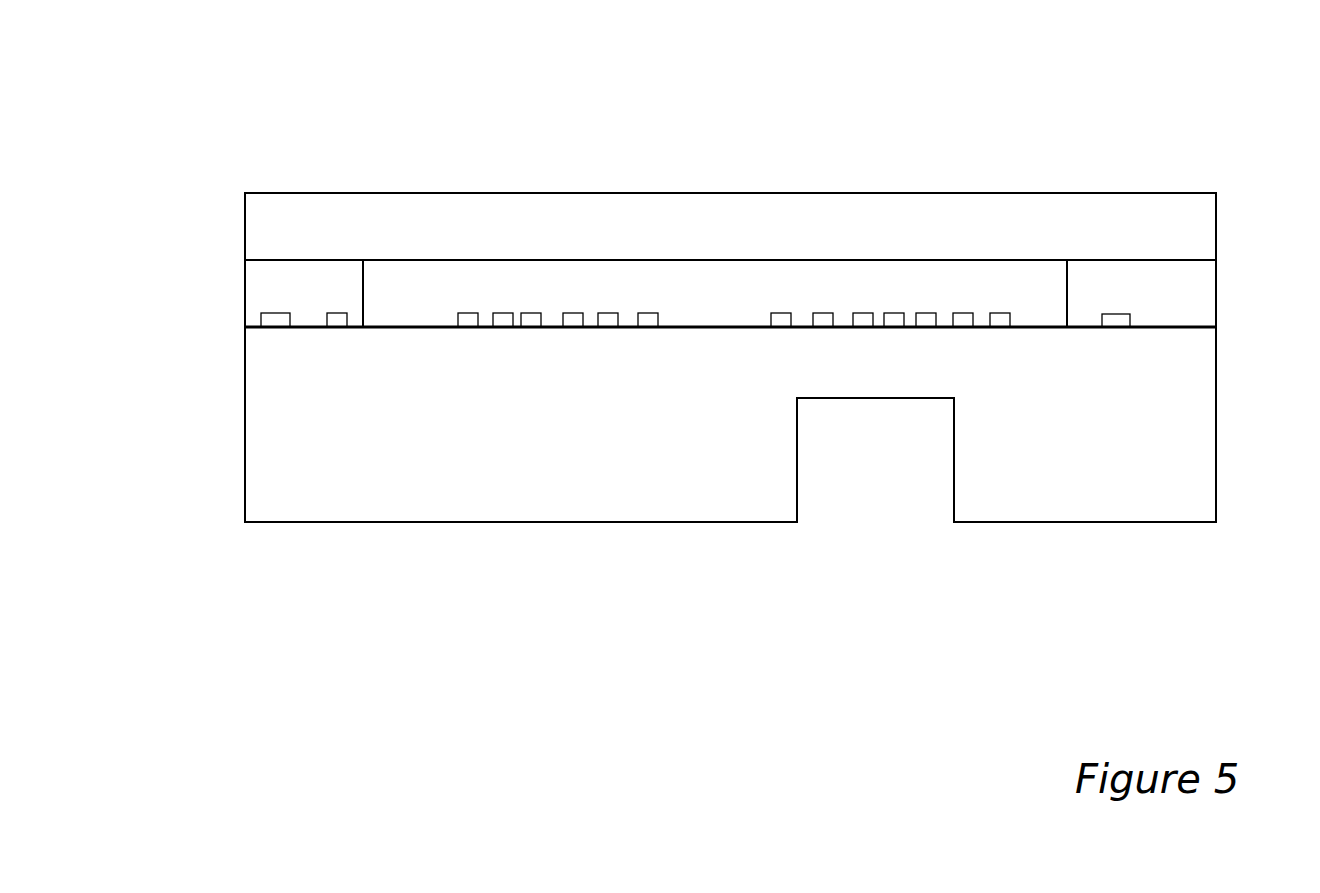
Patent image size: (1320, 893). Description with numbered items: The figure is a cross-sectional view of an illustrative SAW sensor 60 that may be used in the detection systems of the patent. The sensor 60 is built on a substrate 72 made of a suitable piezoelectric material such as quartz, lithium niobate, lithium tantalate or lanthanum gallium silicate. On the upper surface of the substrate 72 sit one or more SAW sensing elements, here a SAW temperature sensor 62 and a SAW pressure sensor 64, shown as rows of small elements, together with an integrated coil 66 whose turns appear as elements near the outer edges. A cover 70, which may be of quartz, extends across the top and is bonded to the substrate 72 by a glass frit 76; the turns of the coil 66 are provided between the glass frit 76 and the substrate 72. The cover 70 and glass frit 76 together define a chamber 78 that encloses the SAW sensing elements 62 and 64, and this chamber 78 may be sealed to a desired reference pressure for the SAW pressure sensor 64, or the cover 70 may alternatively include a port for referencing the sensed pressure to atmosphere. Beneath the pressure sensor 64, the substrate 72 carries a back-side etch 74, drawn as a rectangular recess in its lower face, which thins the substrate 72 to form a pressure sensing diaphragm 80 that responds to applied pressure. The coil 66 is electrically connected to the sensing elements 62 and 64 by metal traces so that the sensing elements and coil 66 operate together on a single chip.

The SAW sensor 60 is at (1086, 92).
The SAW temperature sensor 62 is at (573, 312).
The SAW pressure sensor 64 is at (858, 312).
The coil 66 is at (336, 312).
The cover 70 is at (258, 232).
The substrate 72 is at (258, 432).
The back-side etch 74 is at (887, 488).
The glass frit 76 is at (1176, 307).
The chamber 78 is at (713, 278).
The pressure sensing diaphragm 80 is at (923, 355).